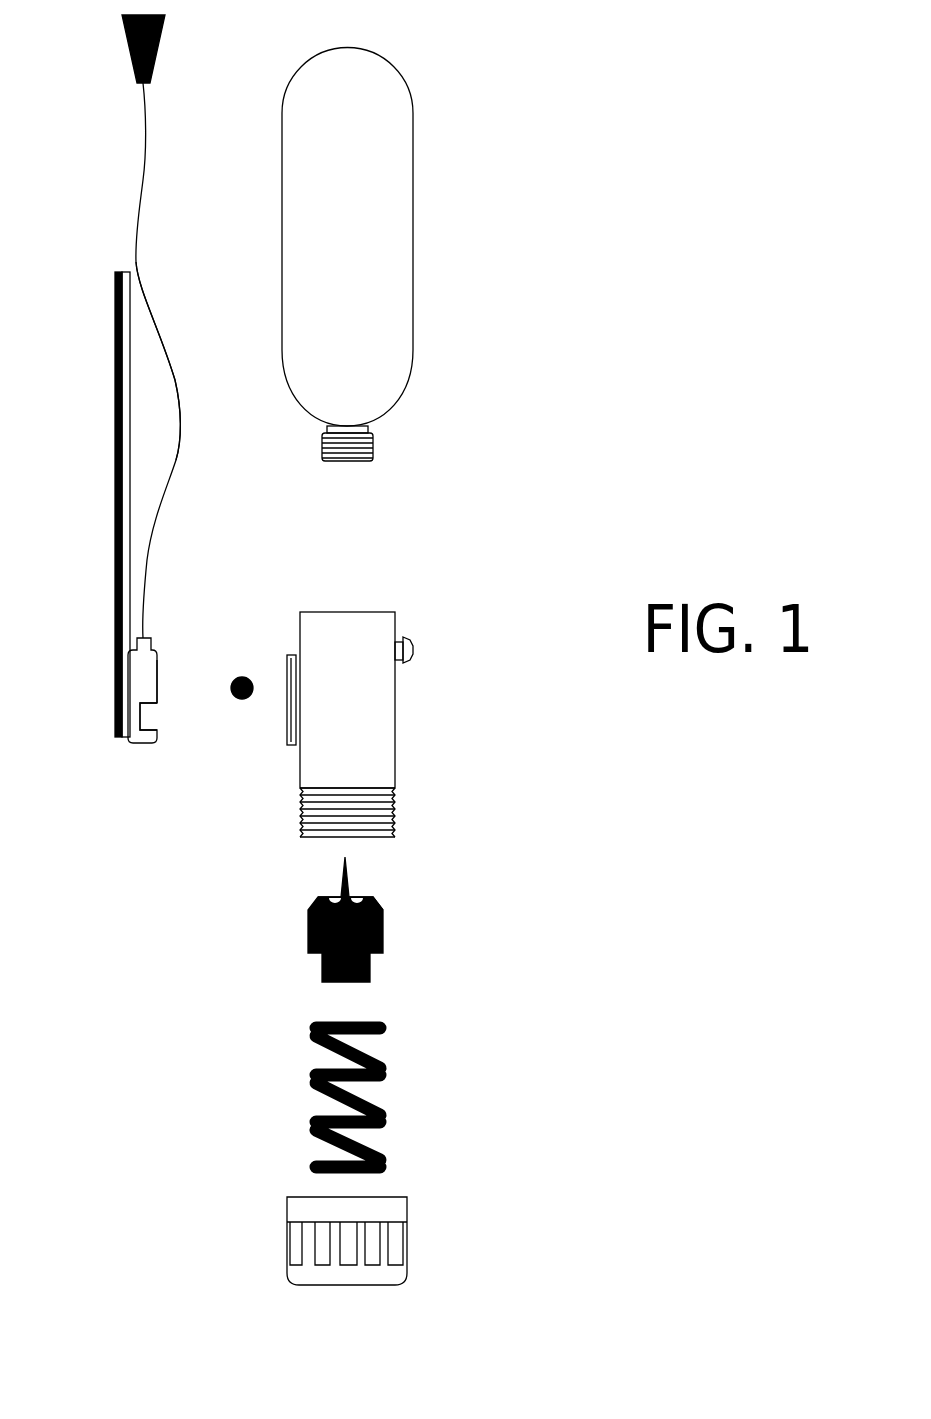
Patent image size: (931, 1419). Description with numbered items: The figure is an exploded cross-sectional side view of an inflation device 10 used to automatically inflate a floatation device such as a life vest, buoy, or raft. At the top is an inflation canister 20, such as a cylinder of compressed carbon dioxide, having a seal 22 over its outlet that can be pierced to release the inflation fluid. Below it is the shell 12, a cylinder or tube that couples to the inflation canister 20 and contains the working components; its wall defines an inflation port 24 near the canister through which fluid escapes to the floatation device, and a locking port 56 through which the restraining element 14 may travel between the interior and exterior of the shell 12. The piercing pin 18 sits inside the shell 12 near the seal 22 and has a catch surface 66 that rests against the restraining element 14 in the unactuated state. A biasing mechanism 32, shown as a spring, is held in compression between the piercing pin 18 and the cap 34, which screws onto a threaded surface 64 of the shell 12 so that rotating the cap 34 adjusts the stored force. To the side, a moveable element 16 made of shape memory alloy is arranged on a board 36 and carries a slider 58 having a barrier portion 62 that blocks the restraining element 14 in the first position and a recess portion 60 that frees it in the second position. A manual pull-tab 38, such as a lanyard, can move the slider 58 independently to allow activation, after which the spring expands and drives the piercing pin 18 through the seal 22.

The inflation device 10 is at (668, 204).
The shell 12 is at (395, 752).
The restraining element 14 is at (231, 684).
The moveable element 16 is at (115, 420).
The piercing pin 18 is at (373, 930).
The inflation canister 20 is at (403, 270).
The seal 22 is at (345, 461).
The inflation port 24 is at (428, 640).
The biasing mechanism 32 is at (387, 1112).
The cap 34 is at (407, 1245).
The board 36 is at (128, 393).
The manual pull-tab 38 is at (143, 180).
The locking port 56 is at (275, 678).
The slider 58 is at (142, 670).
The recess portion 60 is at (146, 716).
The barrier portion 62 is at (157, 682).
The threaded surface 64 is at (395, 812).
The catch surface 66 is at (318, 905).